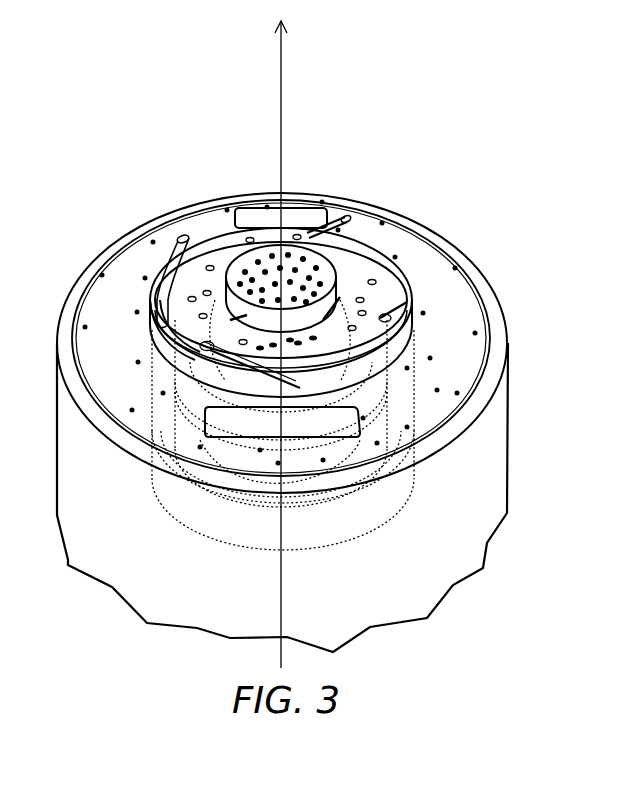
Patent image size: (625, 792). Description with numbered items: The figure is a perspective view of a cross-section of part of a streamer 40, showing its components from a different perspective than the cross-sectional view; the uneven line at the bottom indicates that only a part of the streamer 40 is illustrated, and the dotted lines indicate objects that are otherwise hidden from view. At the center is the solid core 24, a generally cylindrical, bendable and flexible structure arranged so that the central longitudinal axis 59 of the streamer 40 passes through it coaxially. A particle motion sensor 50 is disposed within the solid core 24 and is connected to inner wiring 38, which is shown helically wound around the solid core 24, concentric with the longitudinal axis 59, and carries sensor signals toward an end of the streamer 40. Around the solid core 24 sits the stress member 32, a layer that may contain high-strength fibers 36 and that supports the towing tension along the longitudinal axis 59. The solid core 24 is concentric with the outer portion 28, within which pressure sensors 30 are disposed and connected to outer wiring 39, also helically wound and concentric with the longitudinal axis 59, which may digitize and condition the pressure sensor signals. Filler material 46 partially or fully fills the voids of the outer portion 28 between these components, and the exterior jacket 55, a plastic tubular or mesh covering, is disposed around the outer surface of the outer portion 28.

The solid core 24 is at (307, 265).
The outer portion 28 is at (140, 268).
The pressure sensors 30 is at (256, 215).
The stress member 32 is at (350, 258).
The fibers 36 is at (228, 239).
The inner wiring 38 is at (335, 266).
The outer wiring 39 is at (175, 338).
The streamer 40 is at (485, 195).
The filler material 46 is at (456, 345).
The particle motion sensor 50 is at (250, 357).
The exterior jacket 55 is at (487, 283).
The longitudinal axis 59 is at (282, 73).